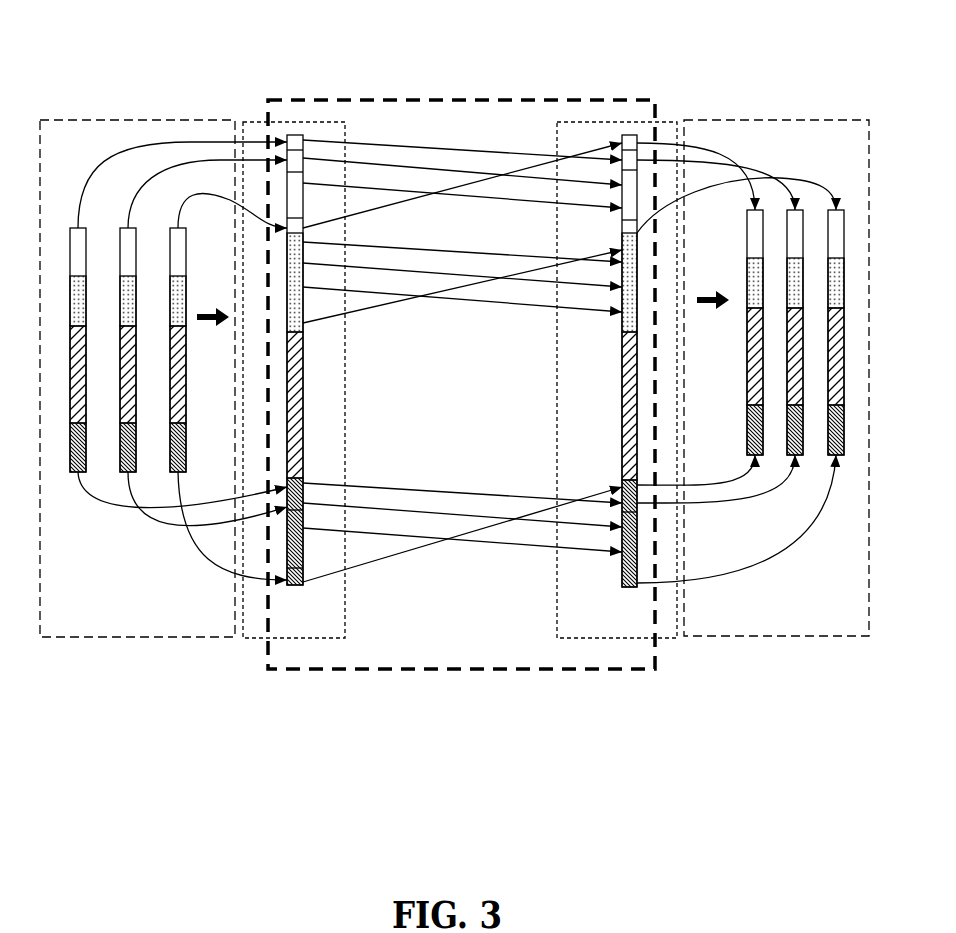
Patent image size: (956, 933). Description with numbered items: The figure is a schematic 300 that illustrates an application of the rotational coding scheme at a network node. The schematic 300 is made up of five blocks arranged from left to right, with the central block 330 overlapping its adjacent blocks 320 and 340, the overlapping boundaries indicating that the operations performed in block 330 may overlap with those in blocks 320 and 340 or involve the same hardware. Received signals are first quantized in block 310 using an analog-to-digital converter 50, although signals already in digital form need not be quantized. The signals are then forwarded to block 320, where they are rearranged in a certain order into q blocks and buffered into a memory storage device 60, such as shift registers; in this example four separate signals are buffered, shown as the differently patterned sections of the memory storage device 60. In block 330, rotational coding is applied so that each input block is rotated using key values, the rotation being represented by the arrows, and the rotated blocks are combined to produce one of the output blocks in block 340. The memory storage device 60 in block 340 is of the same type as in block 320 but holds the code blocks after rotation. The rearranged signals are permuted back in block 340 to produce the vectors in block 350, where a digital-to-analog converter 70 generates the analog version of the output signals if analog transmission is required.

The schematic 300 is at (462, 46).
The block 310 is at (160, 637).
The block 320 is at (257, 638).
The block 330 is at (438, 669).
The block 340 is at (648, 638).
The block 350 is at (753, 636).
The analog-to-digital converter 50 is at (73, 472).
The memory storage device 60 is at (297, 585).
The digital-to-analog converter 70 is at (845, 432).